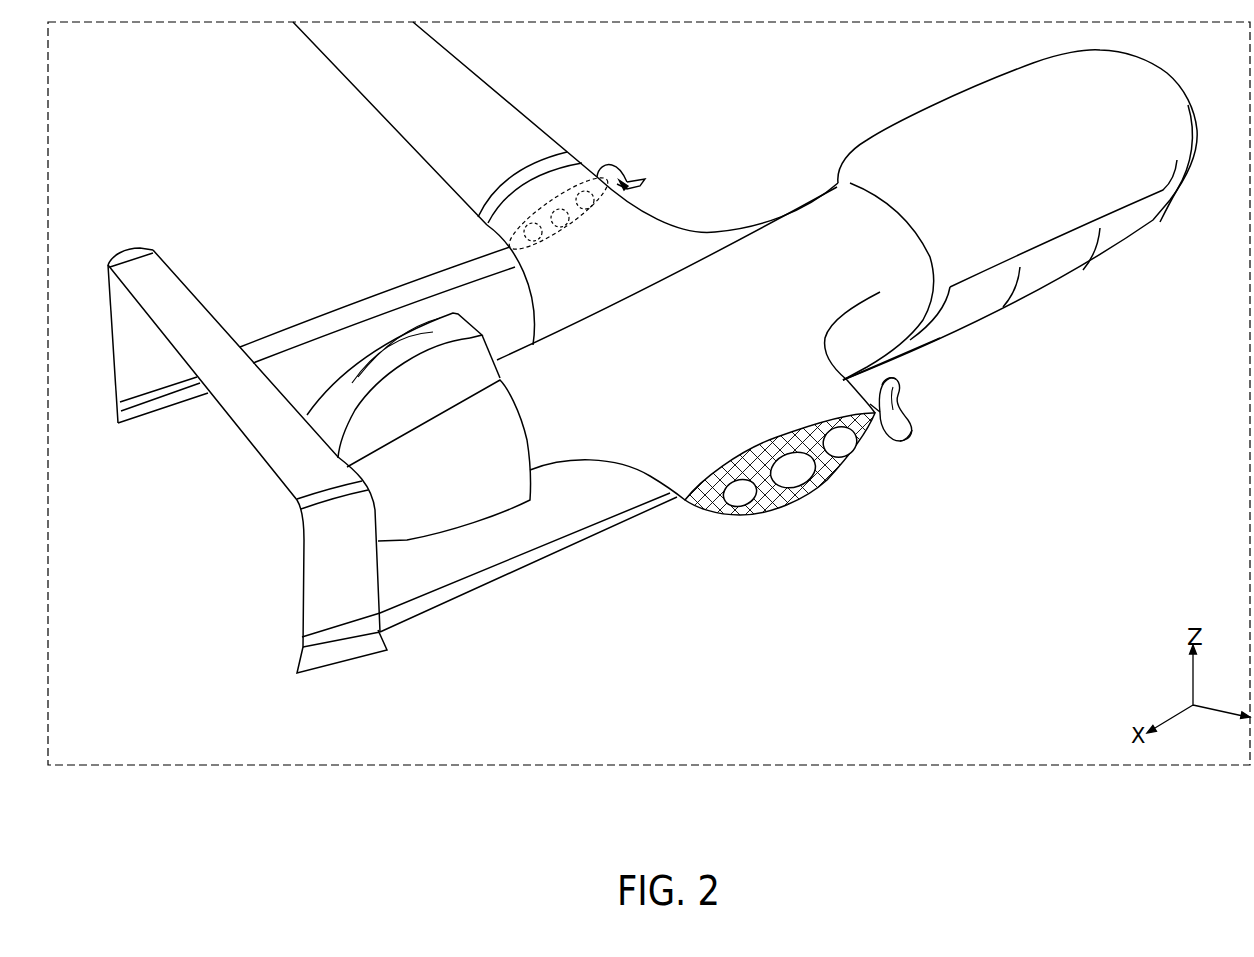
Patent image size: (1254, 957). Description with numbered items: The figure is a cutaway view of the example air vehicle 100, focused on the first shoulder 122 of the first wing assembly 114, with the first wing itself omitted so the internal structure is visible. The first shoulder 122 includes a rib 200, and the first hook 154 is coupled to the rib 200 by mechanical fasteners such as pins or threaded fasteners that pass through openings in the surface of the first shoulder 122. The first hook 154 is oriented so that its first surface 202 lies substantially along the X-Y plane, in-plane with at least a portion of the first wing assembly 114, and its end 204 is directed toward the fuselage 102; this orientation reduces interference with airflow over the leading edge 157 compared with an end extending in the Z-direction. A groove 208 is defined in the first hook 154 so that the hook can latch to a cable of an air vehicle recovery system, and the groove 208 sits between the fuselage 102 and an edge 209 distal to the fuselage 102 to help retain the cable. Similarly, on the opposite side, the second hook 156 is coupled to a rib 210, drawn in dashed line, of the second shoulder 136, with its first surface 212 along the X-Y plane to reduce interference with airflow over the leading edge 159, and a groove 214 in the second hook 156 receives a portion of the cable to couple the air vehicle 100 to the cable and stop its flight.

The air vehicle 100 is at (200, 80).
The fuselage 102 is at (840, 202).
The first wing assembly 114 is at (707, 533).
The first shoulder 122 is at (670, 447).
The second shoulder 136 is at (557, 317).
The first hook 154 is at (953, 435).
The second hook 156 is at (607, 157).
The leading edge 157 is at (857, 393).
The leading edge 159 is at (533, 117).
The rib 200 is at (783, 507).
The first surface 202 is at (903, 417).
The end 204 is at (897, 380).
The groove 208 is at (882, 410).
The edge 209 is at (900, 440).
The rib 210 is at (547, 213).
The first surface 212 is at (632, 182).
The groove 214 is at (633, 198).